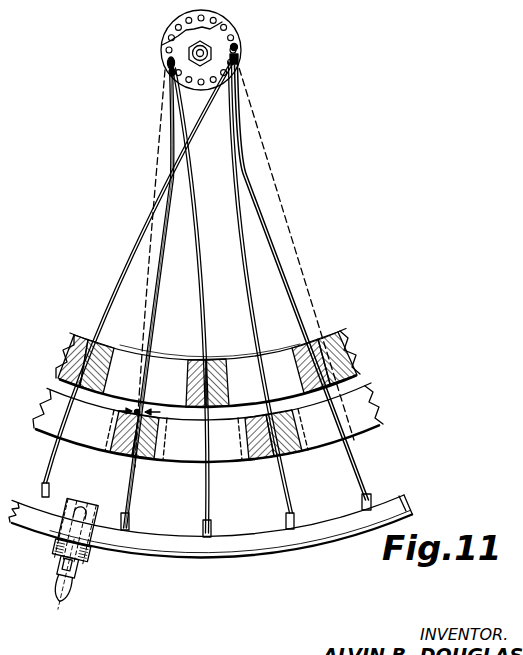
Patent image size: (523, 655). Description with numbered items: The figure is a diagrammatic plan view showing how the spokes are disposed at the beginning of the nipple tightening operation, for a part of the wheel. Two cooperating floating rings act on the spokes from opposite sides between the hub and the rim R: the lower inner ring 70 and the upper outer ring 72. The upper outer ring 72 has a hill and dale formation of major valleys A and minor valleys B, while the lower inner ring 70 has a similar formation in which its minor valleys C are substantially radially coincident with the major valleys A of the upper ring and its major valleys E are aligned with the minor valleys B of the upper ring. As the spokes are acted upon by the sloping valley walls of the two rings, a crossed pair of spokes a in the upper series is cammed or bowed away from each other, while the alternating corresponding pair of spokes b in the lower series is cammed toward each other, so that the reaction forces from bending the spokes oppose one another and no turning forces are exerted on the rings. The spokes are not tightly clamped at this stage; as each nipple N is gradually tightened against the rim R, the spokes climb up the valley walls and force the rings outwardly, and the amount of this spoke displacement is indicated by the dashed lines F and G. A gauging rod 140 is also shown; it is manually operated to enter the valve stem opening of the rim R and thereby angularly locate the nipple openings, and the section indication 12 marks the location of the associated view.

The ring 70 is at (70, 352).
The ring 72 is at (46, 400).
The section line indicator 12 is at (74, 563).
The gauging rod 140 is at (70, 579).
The major valleys A is at (57, 437).
The minor valleys B is at (147, 457).
The minor valleys C is at (87, 343).
The major valleys E is at (124, 352).
The dashed line F is at (155, 162).
The dashed line G is at (255, 150).
The nipple N is at (300, 511).
The rim R is at (388, 498).
The spokes a is at (130, 262).
The spokes b is at (157, 336).